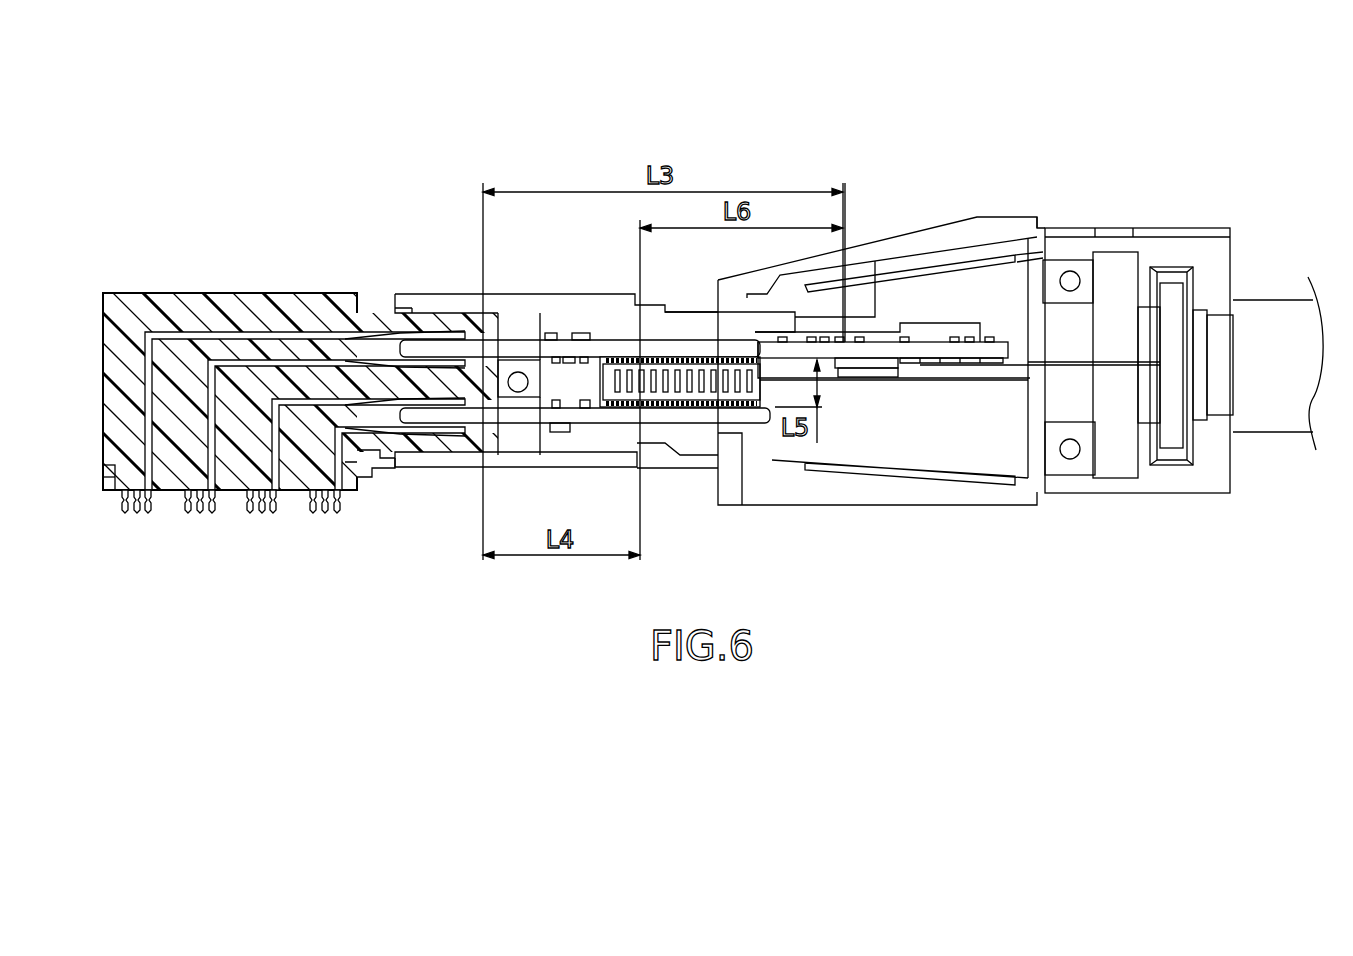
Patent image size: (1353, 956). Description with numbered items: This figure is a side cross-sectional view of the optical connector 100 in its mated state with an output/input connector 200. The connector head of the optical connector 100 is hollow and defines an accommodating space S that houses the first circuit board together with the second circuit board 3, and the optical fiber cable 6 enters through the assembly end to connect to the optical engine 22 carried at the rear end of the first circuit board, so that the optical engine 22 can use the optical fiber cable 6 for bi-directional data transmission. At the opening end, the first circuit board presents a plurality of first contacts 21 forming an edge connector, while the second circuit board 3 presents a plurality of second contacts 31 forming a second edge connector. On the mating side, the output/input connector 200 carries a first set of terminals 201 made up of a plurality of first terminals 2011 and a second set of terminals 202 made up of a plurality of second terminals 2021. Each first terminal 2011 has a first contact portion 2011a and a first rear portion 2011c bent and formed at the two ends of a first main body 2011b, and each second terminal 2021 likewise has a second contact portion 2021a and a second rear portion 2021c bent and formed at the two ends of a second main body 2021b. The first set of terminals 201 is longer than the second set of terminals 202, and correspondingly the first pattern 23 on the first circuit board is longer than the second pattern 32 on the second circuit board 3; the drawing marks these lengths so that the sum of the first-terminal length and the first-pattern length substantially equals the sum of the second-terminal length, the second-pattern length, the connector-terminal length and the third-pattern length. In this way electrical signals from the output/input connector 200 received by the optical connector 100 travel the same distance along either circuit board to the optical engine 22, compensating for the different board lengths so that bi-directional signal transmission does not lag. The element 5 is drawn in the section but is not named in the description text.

The optical connector 100 is at (1110, 176).
The output/input connector 200 is at (228, 270).
The first set of terminals 201 is at (305, 339).
The first terminals 2011 is at (328, 358).
The first contact portion 2011a is at (458, 333).
The first main body 2011b is at (150, 422).
The first rear portion 2011c is at (150, 500).
The second set of terminals 202 is at (358, 502).
The second terminals 2021 is at (338, 462).
The second contact portion 2021a is at (455, 428).
The second main body 2021b is at (352, 470).
The second rear portion 2021c is at (335, 508).
The first contacts 21 is at (438, 345).
The optical engine 22 is at (870, 372).
The first pattern 23 is at (520, 333).
The second circuit board 3 is at (760, 413).
The second contacts 31 is at (427, 415).
The second pattern 32 is at (593, 428).
The connector module 5 is at (705, 403).
The optical fiber cable 6 is at (1117, 368).
The accommodating space S is at (863, 440).